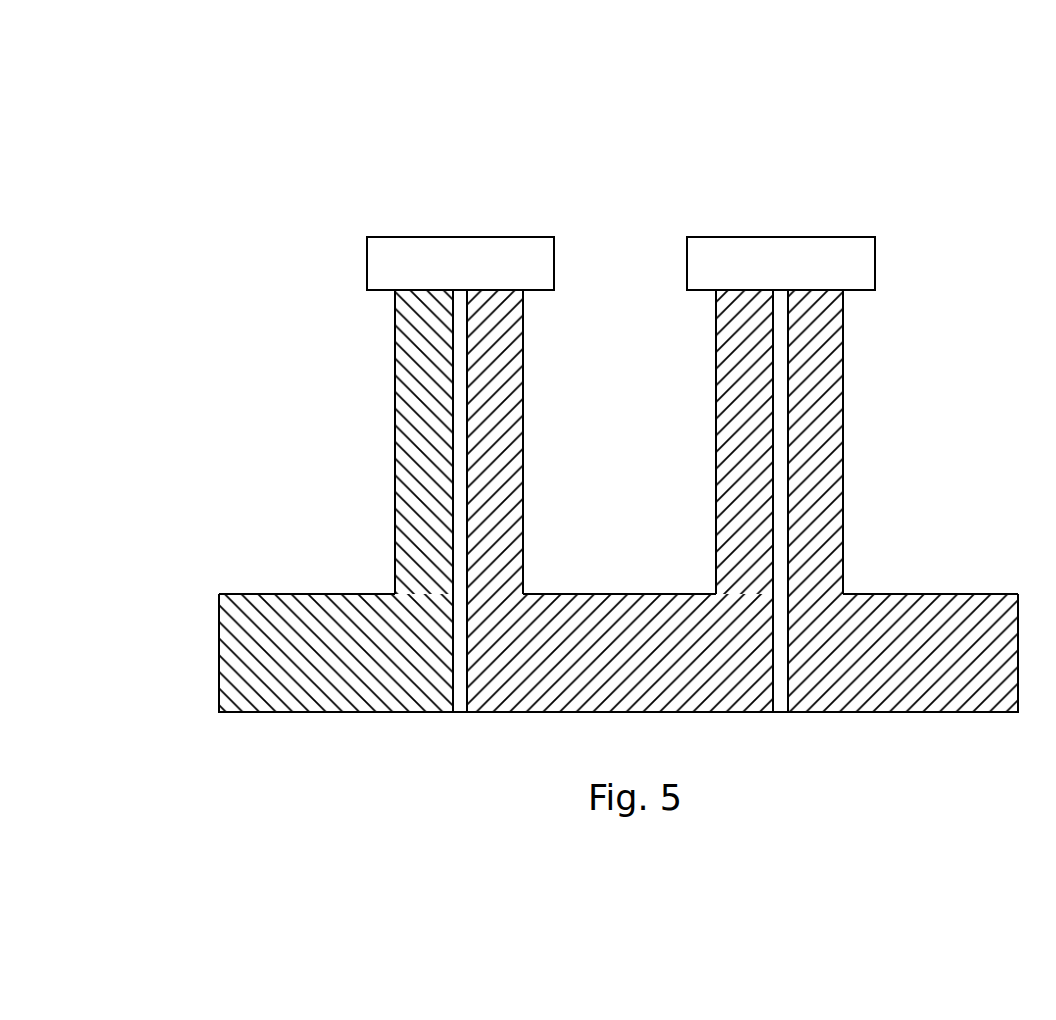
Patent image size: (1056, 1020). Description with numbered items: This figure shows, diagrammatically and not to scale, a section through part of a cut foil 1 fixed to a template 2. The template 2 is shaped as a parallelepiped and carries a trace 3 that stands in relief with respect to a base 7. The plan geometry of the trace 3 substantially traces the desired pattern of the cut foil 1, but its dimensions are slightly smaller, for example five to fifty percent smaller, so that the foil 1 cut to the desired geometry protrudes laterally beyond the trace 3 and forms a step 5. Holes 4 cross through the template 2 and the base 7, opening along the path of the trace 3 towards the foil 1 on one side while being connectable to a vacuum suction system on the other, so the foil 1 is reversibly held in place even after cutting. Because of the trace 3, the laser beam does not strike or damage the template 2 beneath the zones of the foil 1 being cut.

The foil 1 is at (398, 262).
The template 2 is at (180, 371).
The trace 3 is at (487, 505).
The holes 4 is at (782, 436).
The step 5 is at (378, 306).
The base 7 is at (397, 632).